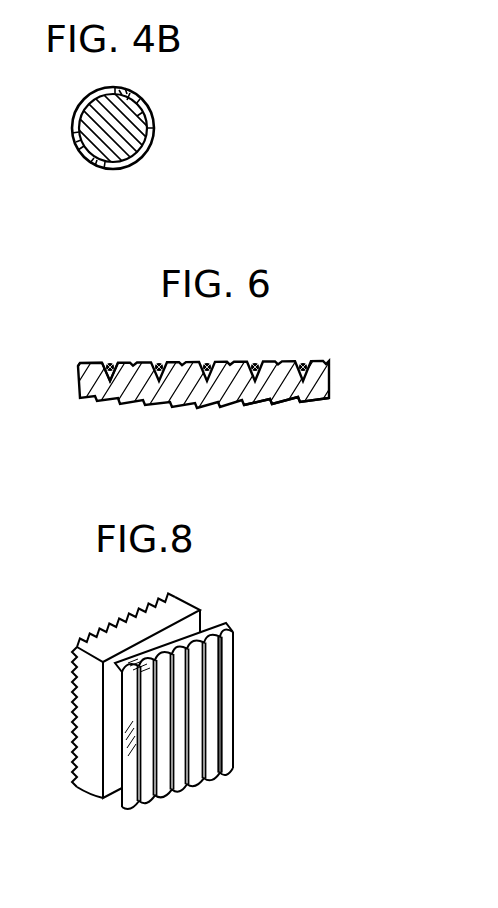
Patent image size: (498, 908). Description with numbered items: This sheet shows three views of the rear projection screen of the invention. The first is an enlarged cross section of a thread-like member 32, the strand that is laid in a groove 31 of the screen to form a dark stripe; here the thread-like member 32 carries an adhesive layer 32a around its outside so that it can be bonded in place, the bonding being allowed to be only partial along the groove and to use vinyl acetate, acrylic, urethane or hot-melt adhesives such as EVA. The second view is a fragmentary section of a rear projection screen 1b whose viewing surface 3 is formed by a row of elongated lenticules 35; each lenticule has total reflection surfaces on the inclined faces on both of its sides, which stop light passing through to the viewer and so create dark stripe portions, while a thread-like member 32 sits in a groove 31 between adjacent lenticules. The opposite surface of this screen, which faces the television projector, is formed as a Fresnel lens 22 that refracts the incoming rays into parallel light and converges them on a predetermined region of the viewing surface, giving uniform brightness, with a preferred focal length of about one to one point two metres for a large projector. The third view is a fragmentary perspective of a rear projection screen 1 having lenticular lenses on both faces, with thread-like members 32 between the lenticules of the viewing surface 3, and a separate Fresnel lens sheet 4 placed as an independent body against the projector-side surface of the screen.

In FIG. 4B, the thread-like member 32 is at (131, 111).
In FIG. 6, the thread-like member 32 is at (161, 362).
In FIG. 8, the thread-like member 32 is at (227, 742).
In FIG. 4B, the adhesive layer 32a is at (145, 153).
In FIG. 6, the rear projection screen 1b is at (330, 378).
In FIG. 6, the elongated lenticule 35 is at (88, 362).
In FIG. 6, the groove 31 is at (109, 362).
In FIG. 6, the Fresnel lens 22 is at (290, 404).
In FIG. 8, the Fresnel lens sheet 4 is at (138, 627).
In FIG. 8, the rear projection screen 1 is at (227, 620).
In FIG. 8, the viewing surface 3 is at (230, 680).